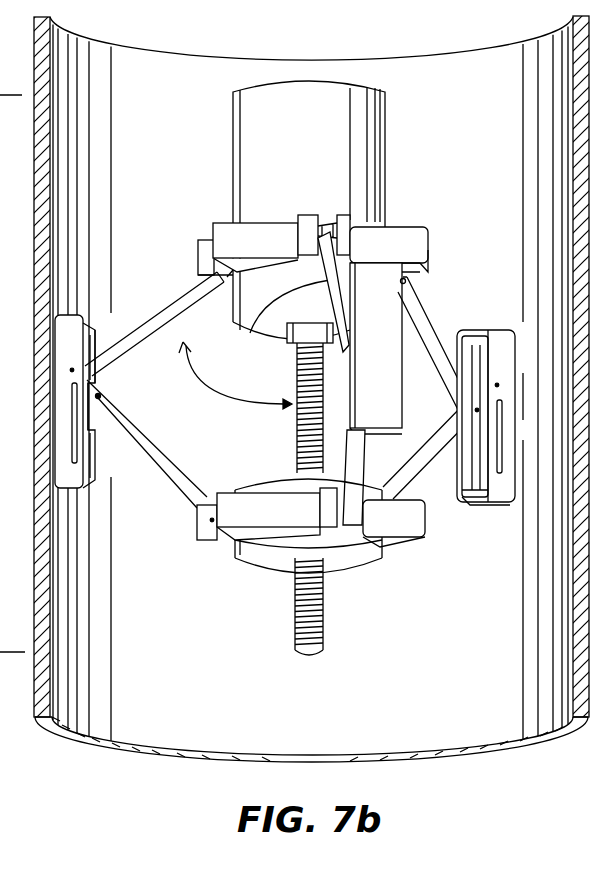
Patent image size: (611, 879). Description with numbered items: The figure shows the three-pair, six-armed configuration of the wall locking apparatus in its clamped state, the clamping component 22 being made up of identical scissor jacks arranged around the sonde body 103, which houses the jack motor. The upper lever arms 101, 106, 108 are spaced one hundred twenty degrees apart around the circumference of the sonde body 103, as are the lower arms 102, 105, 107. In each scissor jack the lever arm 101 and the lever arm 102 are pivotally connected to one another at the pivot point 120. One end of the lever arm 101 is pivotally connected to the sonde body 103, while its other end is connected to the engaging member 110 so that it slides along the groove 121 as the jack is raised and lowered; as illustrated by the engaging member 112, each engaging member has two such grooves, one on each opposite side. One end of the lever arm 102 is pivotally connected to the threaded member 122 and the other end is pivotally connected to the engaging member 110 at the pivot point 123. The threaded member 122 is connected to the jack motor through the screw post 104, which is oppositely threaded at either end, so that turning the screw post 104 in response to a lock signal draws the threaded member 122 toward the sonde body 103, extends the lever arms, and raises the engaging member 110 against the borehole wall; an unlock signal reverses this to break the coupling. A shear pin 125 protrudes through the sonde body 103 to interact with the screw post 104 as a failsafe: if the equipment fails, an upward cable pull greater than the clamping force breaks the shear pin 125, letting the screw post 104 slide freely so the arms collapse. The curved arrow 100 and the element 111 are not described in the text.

The clamping component 22 is at (228, 230).
The pivoting motion arrow 100 is at (235, 379).
The lever arm 101 is at (183, 298).
The lever arm 102 is at (183, 500).
The sonde body 103 is at (381, 112).
The screw post 104 is at (297, 600).
The lower arm 105 is at (363, 455).
The lever arm 106 is at (262, 331).
The lower arm 107 is at (420, 480).
The lever arm 108 is at (418, 303).
The engaging member 110 is at (64, 316).
The bracket 111 is at (397, 412).
The engaging member 112 is at (507, 348).
The pivot point 120 is at (112, 395).
The groove 121 is at (77, 453).
The threaded member 122 is at (255, 567).
The pivot point 123 is at (90, 340).
The shear pin 125 is at (290, 345).